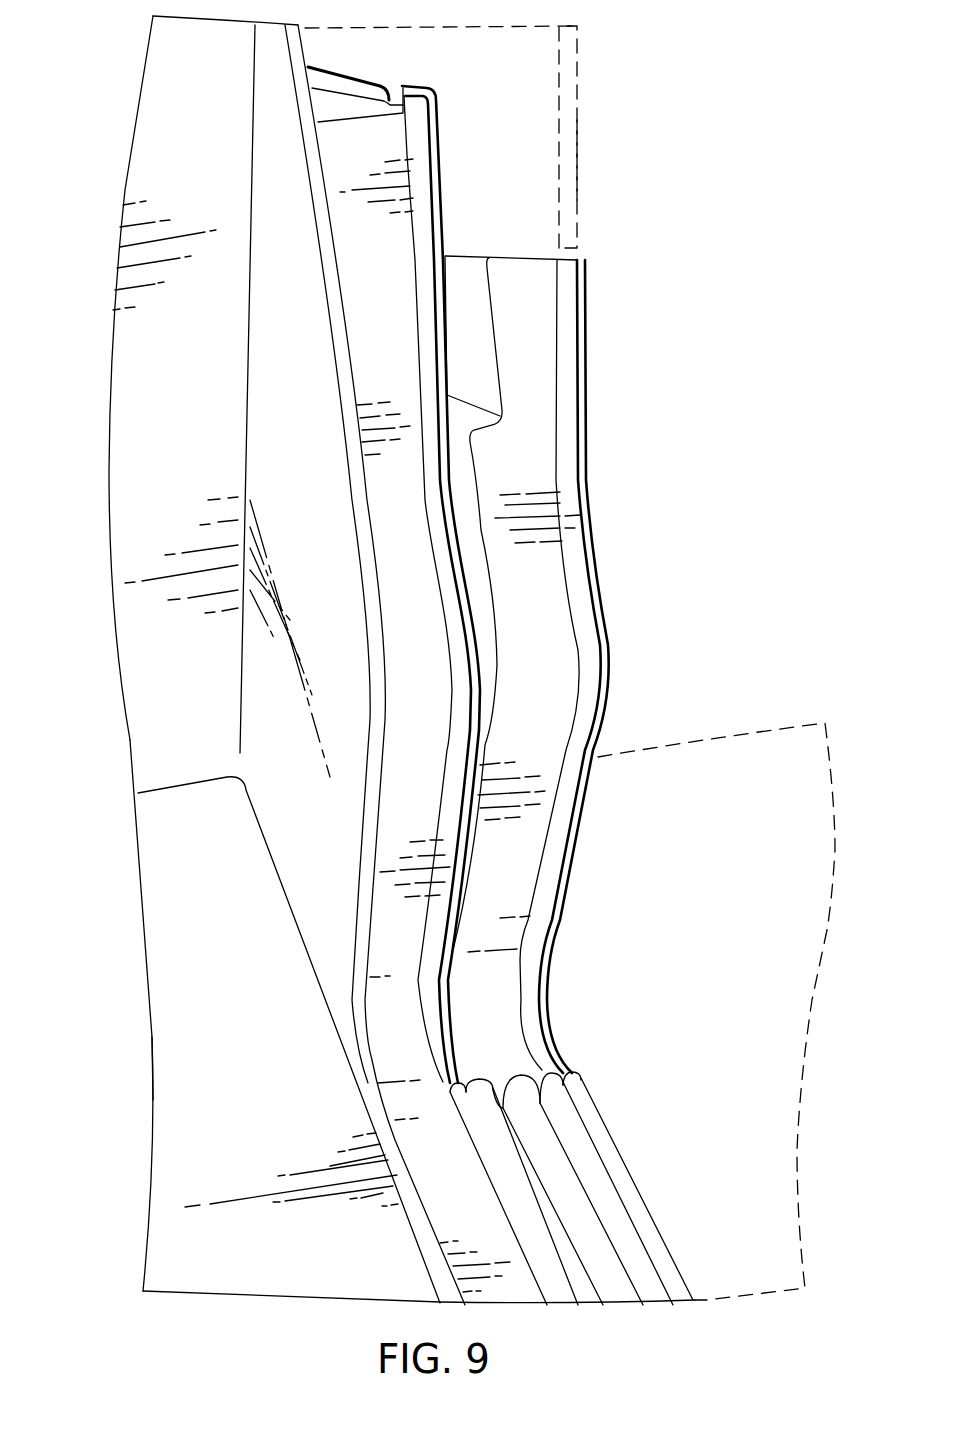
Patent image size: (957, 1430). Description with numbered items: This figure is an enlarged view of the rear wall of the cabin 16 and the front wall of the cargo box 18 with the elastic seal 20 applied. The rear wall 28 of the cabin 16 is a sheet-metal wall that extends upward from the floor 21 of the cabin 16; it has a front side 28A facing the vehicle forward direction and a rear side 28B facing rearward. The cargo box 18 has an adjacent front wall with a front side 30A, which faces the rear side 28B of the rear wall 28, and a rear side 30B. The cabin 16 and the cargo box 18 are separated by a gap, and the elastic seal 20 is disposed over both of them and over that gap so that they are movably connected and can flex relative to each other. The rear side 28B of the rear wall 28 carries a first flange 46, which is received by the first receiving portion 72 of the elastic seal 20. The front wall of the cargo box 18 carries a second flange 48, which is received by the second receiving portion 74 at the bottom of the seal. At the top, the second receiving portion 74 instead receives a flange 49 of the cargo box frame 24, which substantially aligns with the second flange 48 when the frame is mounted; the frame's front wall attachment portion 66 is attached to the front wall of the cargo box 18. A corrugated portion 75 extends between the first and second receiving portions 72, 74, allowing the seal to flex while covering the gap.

The cabin 16 is at (198, 921).
The cargo box 18 is at (740, 785).
The elastic seal 20 is at (662, 1194).
The floor 21 is at (205, 1035).
The cargo box frame 24 is at (580, 85).
The rear wall 28 is at (376, 341).
The front side 28A is at (288, 433).
The rear side 28B is at (436, 135).
The front side 30A is at (480, 620).
The rear side 30B is at (605, 677).
The first flange 46 is at (455, 1078).
The second flange 48 is at (565, 1068).
The flange 49 is at (568, 154).
The front wall attachment portion 66 is at (478, 78).
The first receiving portion 72 is at (582, 1093).
The second receiving portion 74 is at (463, 1107).
The corrugated portion 75 is at (553, 1173).